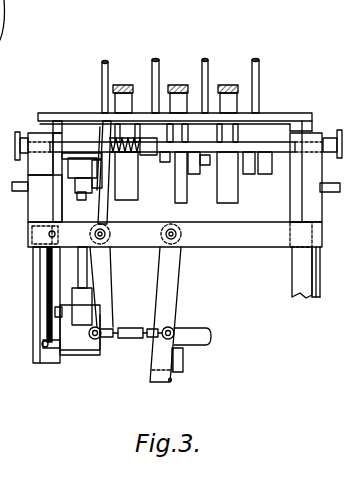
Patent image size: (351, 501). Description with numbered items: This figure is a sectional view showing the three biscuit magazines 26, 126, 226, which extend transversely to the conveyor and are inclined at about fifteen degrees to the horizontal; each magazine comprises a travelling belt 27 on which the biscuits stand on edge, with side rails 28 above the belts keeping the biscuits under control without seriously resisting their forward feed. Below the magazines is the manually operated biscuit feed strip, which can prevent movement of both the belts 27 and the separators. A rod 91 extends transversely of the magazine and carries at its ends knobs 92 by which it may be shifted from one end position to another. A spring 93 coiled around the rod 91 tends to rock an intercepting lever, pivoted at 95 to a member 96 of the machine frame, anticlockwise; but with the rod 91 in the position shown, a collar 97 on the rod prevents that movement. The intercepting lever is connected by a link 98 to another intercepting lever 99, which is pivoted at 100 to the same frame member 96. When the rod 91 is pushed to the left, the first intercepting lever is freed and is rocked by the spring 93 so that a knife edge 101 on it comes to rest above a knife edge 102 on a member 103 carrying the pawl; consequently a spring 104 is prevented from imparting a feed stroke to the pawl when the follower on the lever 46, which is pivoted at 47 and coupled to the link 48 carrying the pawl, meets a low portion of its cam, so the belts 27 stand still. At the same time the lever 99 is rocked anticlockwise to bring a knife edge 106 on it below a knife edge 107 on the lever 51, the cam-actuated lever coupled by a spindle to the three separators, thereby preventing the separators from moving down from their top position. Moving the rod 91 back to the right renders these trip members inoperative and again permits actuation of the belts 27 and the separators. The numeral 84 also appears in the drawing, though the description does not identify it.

The biscuit magazine 26 is at (231, 68).
The biscuit magazine 126 is at (180, 68).
The biscuit magazine 226 is at (127, 70).
The side rail 28 is at (105, 62).
The travelling belt 27 is at (126, 86).
The rod 91 is at (253, 146).
The knob 92 is at (17, 133).
The spring 93 is at (158, 160).
The pivot 95 is at (107, 243).
The member of the machine frame 96 is at (258, 245).
The collar 97 is at (100, 127).
The link 98 is at (133, 327).
The intercepting lever 99 is at (177, 287).
The pivot 100 is at (176, 228).
The knife edge 101 is at (100, 160).
The knife edge 102 is at (60, 235).
The member 103 is at (100, 195).
The spring 104 is at (48, 298).
The knife edge 106 is at (170, 380).
The knife edge 107 is at (173, 372).
The lever 46 is at (70, 353).
The pivot 47 is at (202, 335).
The link 48 is at (80, 270).
The lever 51 is at (185, 357).
The lever 84 is at (108, 275).